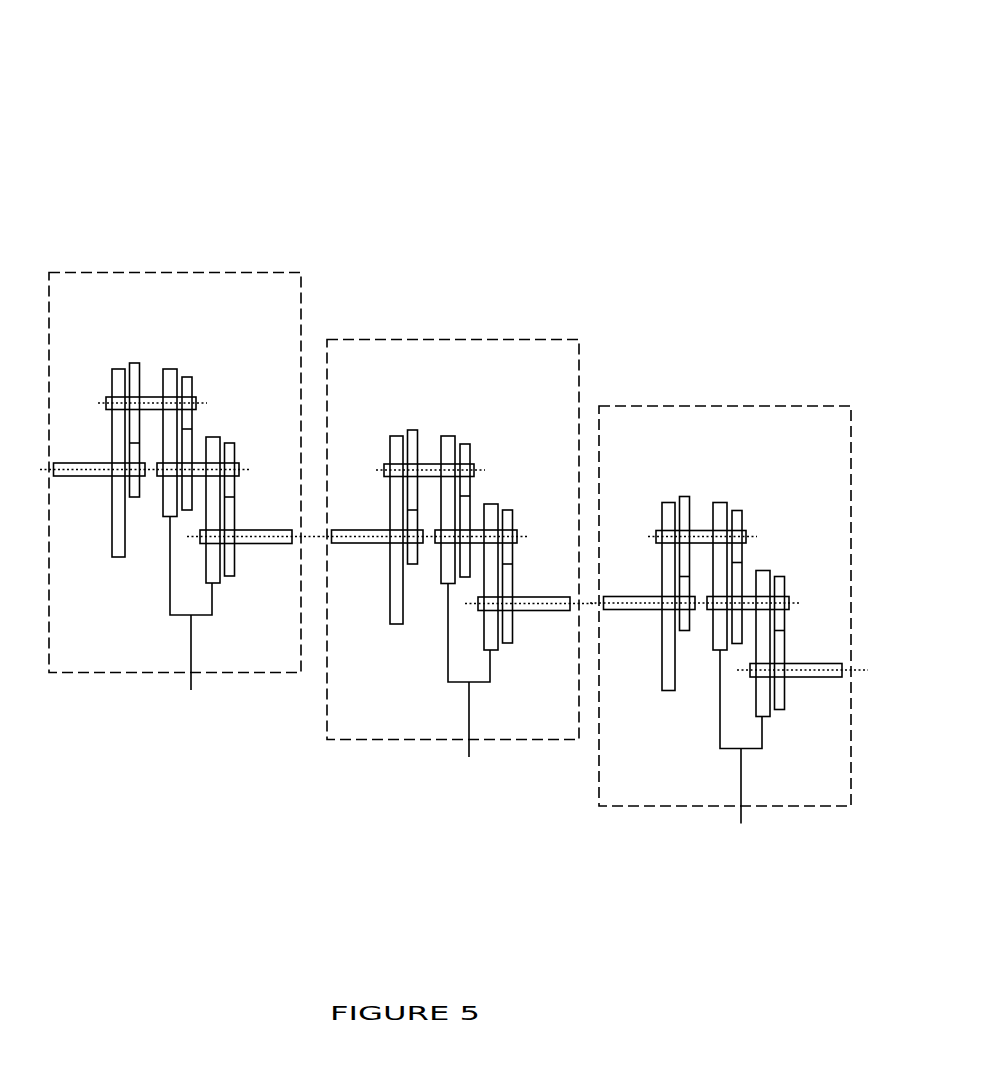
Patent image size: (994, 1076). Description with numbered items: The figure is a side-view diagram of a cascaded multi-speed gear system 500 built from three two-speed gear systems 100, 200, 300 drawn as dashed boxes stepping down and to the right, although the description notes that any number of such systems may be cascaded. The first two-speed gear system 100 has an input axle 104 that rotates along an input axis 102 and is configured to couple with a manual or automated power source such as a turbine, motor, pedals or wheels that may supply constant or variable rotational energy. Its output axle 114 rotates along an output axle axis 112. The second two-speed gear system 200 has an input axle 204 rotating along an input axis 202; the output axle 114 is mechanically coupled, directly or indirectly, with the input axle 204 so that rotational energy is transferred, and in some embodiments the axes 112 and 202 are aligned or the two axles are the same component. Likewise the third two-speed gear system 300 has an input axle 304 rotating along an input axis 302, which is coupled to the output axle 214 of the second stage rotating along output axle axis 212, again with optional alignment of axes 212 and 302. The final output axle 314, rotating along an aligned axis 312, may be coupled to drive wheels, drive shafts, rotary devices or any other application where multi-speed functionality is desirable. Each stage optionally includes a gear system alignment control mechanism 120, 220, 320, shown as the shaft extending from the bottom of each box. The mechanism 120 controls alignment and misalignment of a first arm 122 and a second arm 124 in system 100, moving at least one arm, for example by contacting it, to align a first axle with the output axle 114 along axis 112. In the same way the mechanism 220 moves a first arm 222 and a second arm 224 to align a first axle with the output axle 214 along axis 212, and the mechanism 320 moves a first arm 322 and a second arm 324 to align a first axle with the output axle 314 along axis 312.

The cascaded multi-speed gear system 500 is at (696, 69).
The two-speed gear system 100 is at (725, 575).
The input axis 102 is at (802, 647).
The input axle 104 is at (799, 633).
The output axle axis 112 is at (695, 583).
The output axle 114 is at (644, 597).
The gear system alignment control mechanism 120 is at (784, 697).
The first arm 122 is at (791, 621).
The second arm 124 is at (748, 554).
The two-speed gear system 200 is at (453, 508).
The input axis 202 is at (530, 580).
The input axle 204 is at (527, 566).
The output axle axis 212 is at (423, 516).
The output axle 214 is at (372, 530).
The gear system alignment control mechanism 220 is at (512, 630).
The first arm 222 is at (519, 554).
The second arm 224 is at (476, 487).
The two-speed gear system 300 is at (160, 272).
The input axis 302 is at (255, 537).
The input axle 304 is at (273, 530).
The output axle axis 312 is at (82, 469).
The output axle 314 is at (102, 462).
The gear system alignment control mechanism 320 is at (233, 462).
The first arm 322 is at (213, 437).
The second arm 324 is at (169, 369).